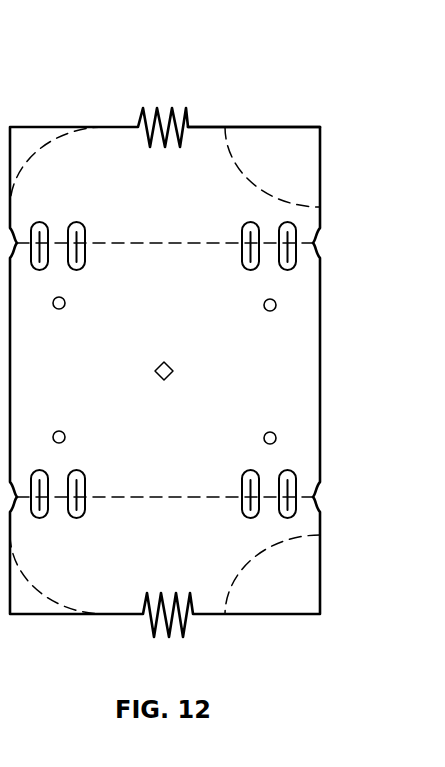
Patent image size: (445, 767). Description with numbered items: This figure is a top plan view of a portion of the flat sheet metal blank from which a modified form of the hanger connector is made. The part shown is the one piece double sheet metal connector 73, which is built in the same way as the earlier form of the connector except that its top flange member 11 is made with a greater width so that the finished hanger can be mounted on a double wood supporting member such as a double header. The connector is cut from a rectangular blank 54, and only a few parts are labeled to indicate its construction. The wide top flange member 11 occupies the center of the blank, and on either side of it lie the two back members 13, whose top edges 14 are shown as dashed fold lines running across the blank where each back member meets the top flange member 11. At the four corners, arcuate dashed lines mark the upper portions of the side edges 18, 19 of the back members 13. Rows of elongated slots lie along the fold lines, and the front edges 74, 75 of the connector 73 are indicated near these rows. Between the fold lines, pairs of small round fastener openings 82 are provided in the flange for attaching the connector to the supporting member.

The one piece sheet metal connector 73 is at (320, 315).
The rectangular blank 54 is at (297, 128).
The upper portion of side edge of back member 18 is at (237, 164).
The upper portion of side edge of back member 19 is at (56, 194).
The back member 13 is at (200, 217).
The top flange member 11 is at (148, 328).
The top edge of back member 14 is at (185, 248).
The front edge 74 is at (108, 245).
The front edge 75 is at (110, 498).
The fastener opening 82 is at (59, 309).